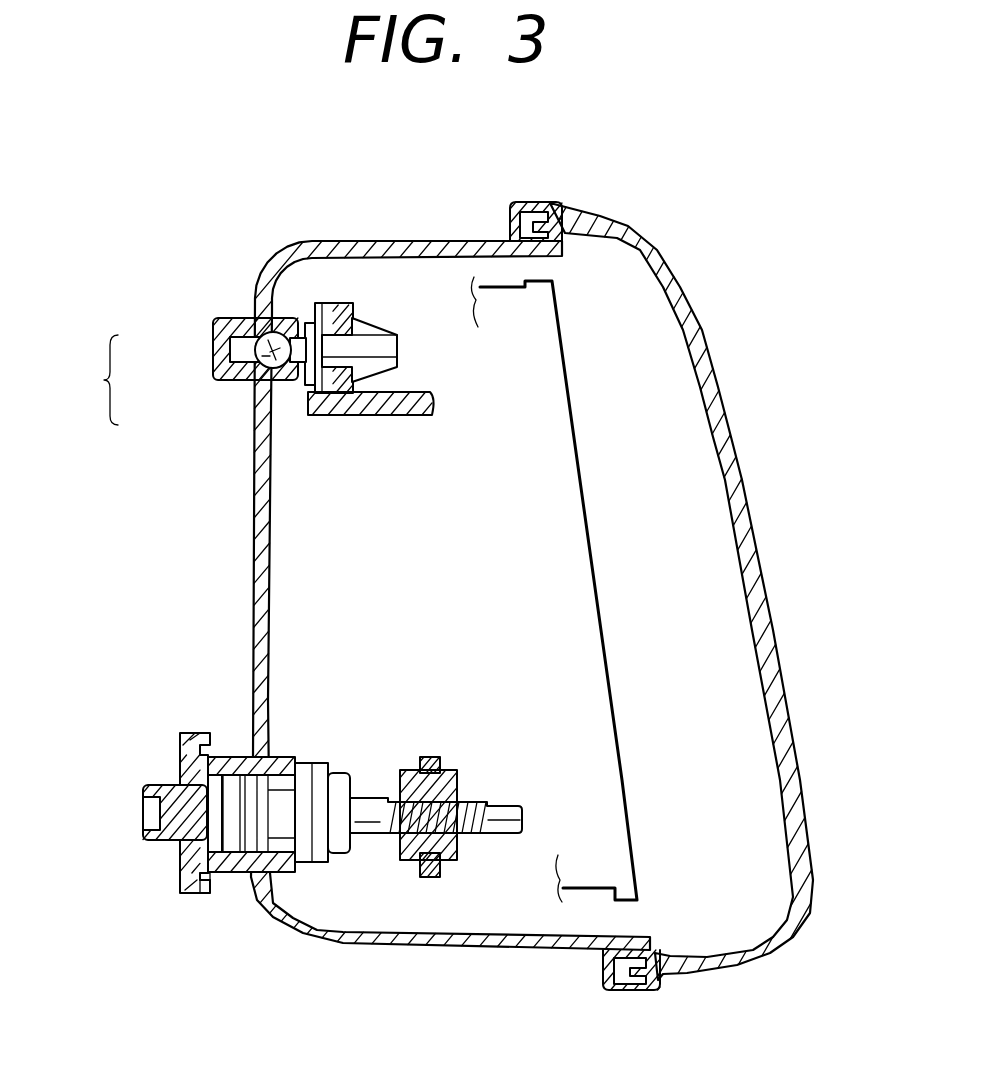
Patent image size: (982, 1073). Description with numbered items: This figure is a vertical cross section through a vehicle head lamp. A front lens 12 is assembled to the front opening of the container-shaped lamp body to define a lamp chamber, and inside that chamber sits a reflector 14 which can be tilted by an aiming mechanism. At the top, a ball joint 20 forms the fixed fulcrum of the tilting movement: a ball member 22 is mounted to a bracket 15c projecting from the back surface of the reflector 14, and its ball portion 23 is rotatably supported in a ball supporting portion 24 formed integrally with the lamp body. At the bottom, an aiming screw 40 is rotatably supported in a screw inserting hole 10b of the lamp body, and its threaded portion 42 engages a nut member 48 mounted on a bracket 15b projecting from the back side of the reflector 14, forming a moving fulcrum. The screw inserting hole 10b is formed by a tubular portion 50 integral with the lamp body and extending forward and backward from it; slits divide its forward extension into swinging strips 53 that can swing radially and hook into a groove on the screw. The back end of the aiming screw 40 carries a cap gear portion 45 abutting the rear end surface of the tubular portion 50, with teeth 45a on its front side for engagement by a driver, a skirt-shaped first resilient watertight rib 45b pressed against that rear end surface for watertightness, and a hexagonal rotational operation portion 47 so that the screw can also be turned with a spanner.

The screw inserting hole 10b is at (245, 872).
The front lens 12 is at (725, 398).
The reflector 14 is at (600, 633).
The bracket 15b is at (440, 877).
The bracket 15c is at (327, 303).
The ball joint 20 is at (72, 380).
The ball member 22 is at (375, 335).
The ball portion 23 is at (230, 380).
The ball supporting portion 24 is at (215, 347).
The aiming screw 40 is at (373, 830).
The threaded portion 42 is at (470, 810).
The cap gear portion 45 is at (185, 745).
The teeth 45a is at (200, 890).
The first resilient watertight rib 45b is at (190, 877).
The rotational operation portion 47 is at (150, 810).
The nut member 48 is at (415, 862).
The tubular portion 50 is at (238, 757).
The swinging strips 53 is at (313, 760).